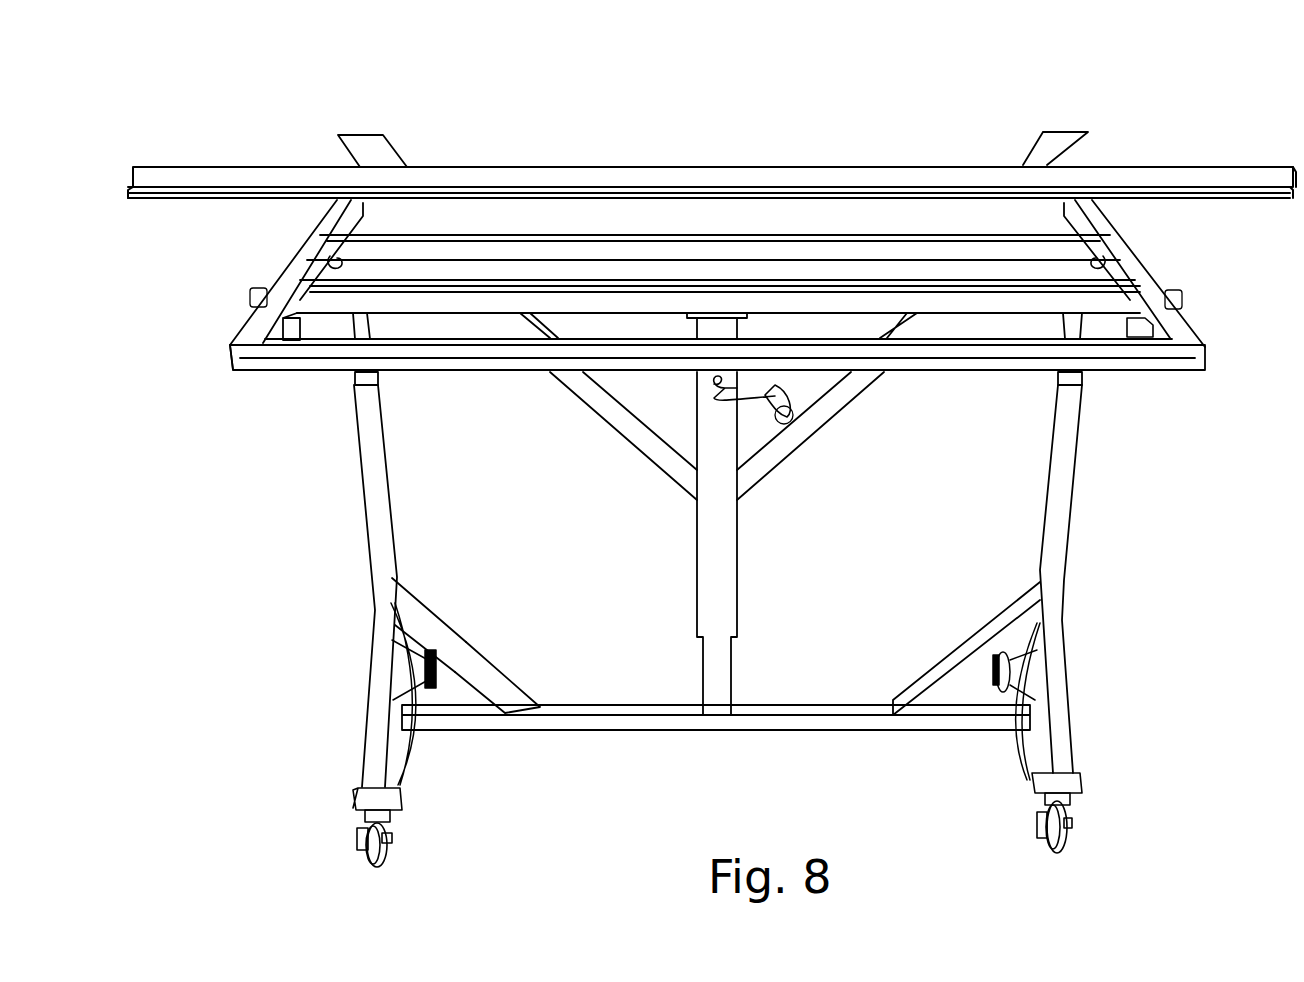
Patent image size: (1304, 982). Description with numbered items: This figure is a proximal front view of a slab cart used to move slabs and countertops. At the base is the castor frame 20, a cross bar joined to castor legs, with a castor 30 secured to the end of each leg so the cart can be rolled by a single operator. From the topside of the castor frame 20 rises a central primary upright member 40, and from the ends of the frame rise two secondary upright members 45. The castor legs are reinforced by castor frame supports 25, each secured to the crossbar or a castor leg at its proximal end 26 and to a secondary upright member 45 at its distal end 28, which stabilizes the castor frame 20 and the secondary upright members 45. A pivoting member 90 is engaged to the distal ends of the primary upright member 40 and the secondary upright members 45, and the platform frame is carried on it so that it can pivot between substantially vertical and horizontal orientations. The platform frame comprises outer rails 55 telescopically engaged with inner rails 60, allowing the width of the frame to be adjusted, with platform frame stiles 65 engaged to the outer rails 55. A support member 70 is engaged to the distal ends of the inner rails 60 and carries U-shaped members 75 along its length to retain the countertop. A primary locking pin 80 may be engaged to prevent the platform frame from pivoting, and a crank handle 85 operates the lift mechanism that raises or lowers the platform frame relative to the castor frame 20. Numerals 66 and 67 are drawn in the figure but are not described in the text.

The castor frame 20 is at (613, 723).
The castor frame support 25 is at (375, 718).
The proximal end of castor frame support 26 is at (515, 693).
The distal end of castor frame support 28 is at (430, 610).
The castor 30 is at (1072, 837).
The primary upright member 40 is at (718, 485).
The secondary upright member 45 is at (370, 453).
The outer rail 55 is at (252, 330).
The inner rail 60 is at (327, 227).
The platform frame stile 65 is at (843, 343).
The front rail 66 is at (278, 360).
The corner block 67 is at (1137, 350).
The support member 70 is at (560, 187).
The U-shaped member 75 is at (360, 142).
The primary locking pin 80 is at (1183, 300).
The crank handle 85 is at (780, 423).
The pivoting member 90 is at (375, 290).